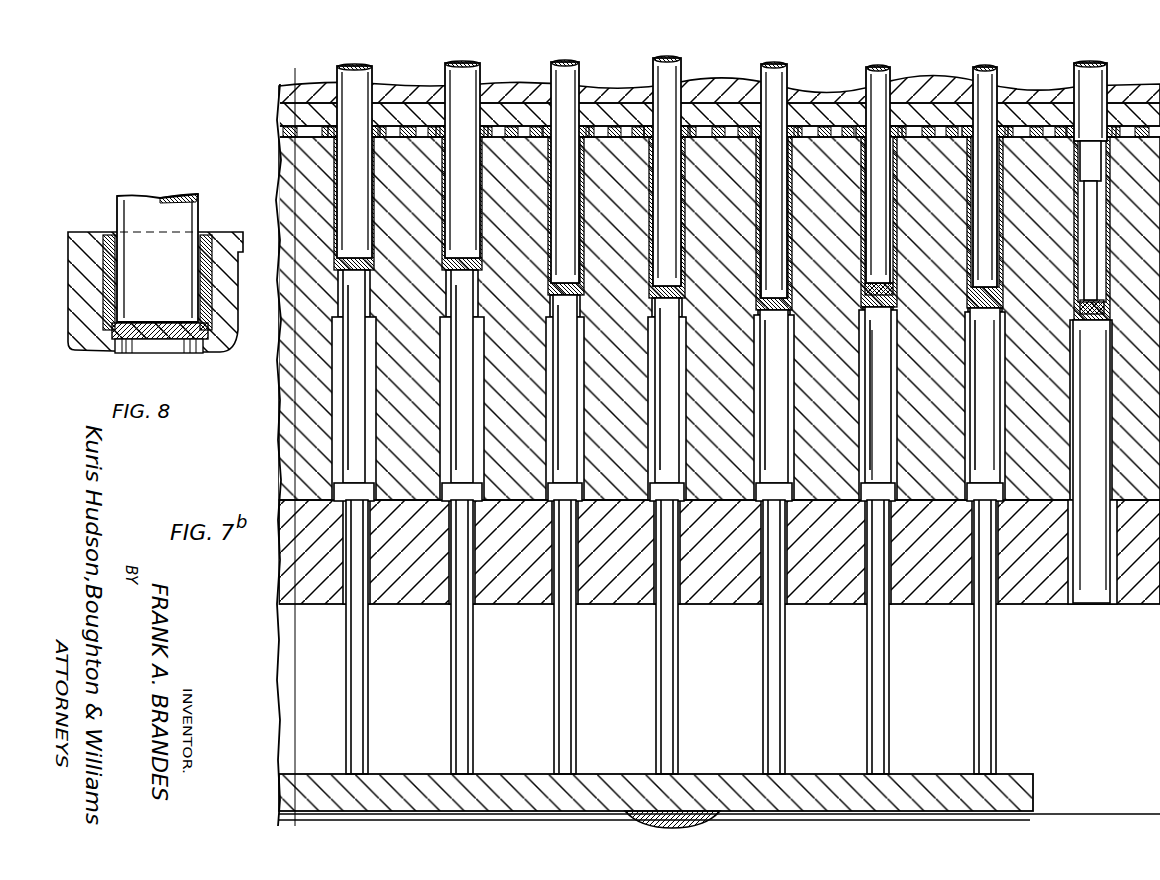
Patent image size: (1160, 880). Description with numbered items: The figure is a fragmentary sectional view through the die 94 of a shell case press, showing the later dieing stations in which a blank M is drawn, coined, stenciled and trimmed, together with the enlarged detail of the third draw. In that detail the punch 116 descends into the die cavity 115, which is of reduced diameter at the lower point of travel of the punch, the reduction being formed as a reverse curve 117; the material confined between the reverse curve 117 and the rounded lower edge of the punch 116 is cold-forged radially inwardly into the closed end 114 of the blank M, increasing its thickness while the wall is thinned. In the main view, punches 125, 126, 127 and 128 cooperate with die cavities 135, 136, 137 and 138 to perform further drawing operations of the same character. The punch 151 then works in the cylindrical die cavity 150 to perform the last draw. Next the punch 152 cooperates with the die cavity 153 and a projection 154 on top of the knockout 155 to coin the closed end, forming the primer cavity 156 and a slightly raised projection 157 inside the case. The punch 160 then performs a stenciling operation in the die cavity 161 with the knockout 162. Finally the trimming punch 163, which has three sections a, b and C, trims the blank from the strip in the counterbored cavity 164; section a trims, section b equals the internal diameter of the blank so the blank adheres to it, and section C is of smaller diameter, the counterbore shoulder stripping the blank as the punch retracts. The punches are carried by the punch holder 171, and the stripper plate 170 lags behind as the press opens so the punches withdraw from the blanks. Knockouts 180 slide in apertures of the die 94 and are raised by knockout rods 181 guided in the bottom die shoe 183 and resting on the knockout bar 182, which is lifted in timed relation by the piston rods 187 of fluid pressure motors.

In FIG. 7B, the die 94 is at (280, 438).
In FIG. 7B, the punch 125 is at (365, 82).
In FIG. 7B, the punch 126 is at (470, 82).
In FIG. 7B, the punch 127 is at (575, 78).
In FIG. 7B, the punch 128 is at (676, 76).
In FIG. 7B, the punch 151 is at (780, 74).
In FIG. 7B, the punch 152 is at (882, 74).
In FIG. 7B, the punch 160 is at (990, 76).
In FIG. 7B, the die cavity 135 is at (372, 220).
In FIG. 7B, the die cavity 136 is at (474, 172).
In FIG. 7B, the die cavity 137 is at (576, 172).
In FIG. 7B, the die cavity 138 is at (684, 172).
In FIG. 7B, the die cavity 150 is at (790, 184).
In FIG. 7B, the die cavity 153 is at (879, 216).
In FIG. 7B, the die cavity 161 is at (994, 184).
In FIG. 7B, the primer cavity 156 is at (1088, 320).
In FIG. 7B, the projection 154 is at (884, 318).
In FIG. 7B, the knockout 155 is at (880, 386).
In FIG. 7B, the raised projection 157 is at (886, 286).
In FIG. 7B, the knockout 162 is at (988, 395).
In FIG. 7B, the trimming punch 163 is at (1137, 250).
In FIG. 7B, the die cavity 164 is at (1112, 394).
In FIG. 7B, the stripper plate 170 is at (920, 102).
In FIG. 7B, the punch holder 171 is at (836, 92).
In FIG. 7B, the knockouts 180 is at (345, 385).
In FIG. 7B, the knockout rods 181 is at (456, 674).
In FIG. 7B, the knockout bar 182 is at (520, 786).
In FIG. 7B, the bottom die shoe 183 is at (530, 600).
In FIG. 7B, the piston rods 187 is at (708, 800).
In FIG. 7B, the section of punch a is at (1104, 76).
In FIG. 7B, the section of punch b is at (1100, 164).
In FIG. 7B, the section of punch C is at (1094, 226).
In FIG. 7B, the blank M is at (650, 216).
In FIG. 8, the blank M is at (226, 248).
In FIG. 8, the closed end 114 is at (140, 338).
In FIG. 8, the die cavity 115 is at (104, 328).
In FIG. 8, the punch 116 is at (138, 268).
In FIG. 8, the reverse curve 117 is at (200, 345).